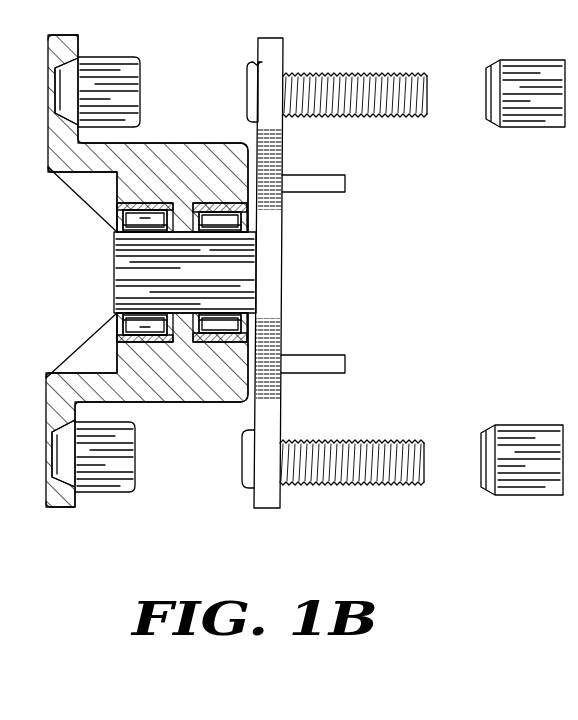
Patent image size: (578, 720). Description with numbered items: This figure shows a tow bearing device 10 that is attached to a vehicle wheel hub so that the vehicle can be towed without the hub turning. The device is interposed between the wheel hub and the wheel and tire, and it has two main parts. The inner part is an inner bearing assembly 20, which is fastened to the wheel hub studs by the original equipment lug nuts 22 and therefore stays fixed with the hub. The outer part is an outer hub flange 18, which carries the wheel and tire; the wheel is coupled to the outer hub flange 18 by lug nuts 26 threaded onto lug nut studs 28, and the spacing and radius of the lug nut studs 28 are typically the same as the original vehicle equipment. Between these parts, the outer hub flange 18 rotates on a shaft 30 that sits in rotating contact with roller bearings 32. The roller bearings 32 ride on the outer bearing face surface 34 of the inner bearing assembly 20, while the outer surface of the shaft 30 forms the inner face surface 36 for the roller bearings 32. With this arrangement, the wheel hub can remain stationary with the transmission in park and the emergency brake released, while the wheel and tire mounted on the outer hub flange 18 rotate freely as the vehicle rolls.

The tow bearing device 10 is at (182, 485).
The outer hub flange 18 is at (273, 205).
The inner bearing assembly 20 is at (82, 163).
The lug nuts 22 is at (138, 80).
The lug nuts 26 is at (508, 63).
The lug nut studs 28 is at (397, 118).
The shaft 30 is at (115, 273).
The roller bearings 32 is at (133, 227).
The outer bearing face surface 34 is at (218, 203).
The inner face surface 36 is at (258, 224).